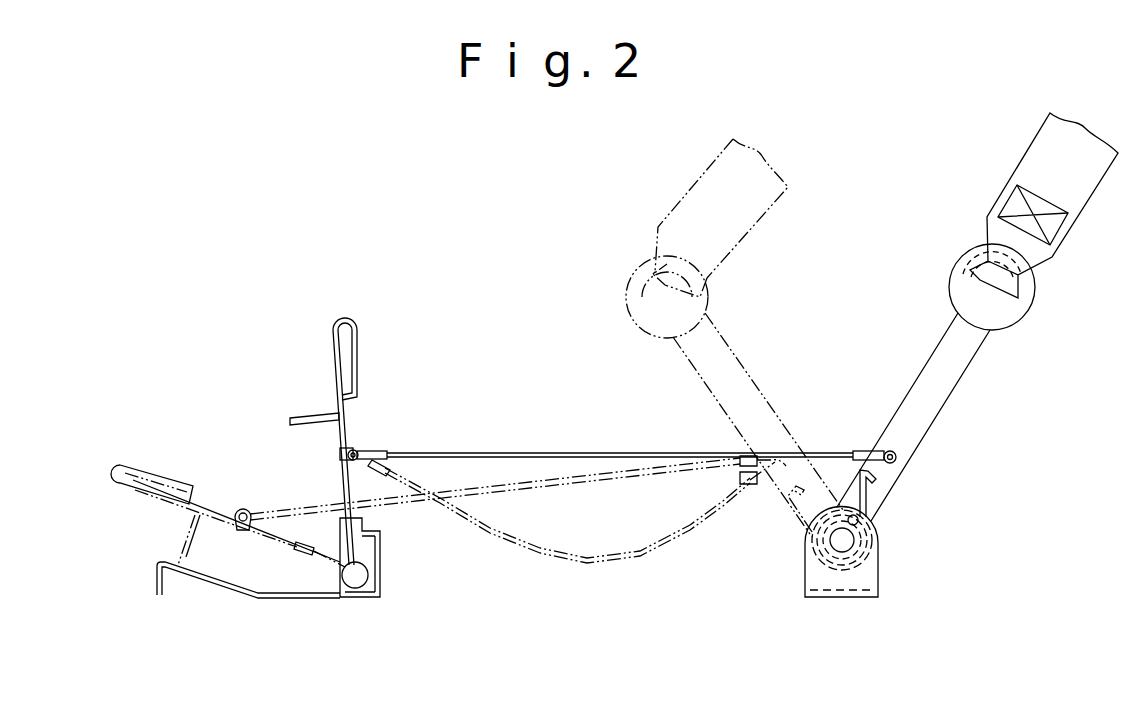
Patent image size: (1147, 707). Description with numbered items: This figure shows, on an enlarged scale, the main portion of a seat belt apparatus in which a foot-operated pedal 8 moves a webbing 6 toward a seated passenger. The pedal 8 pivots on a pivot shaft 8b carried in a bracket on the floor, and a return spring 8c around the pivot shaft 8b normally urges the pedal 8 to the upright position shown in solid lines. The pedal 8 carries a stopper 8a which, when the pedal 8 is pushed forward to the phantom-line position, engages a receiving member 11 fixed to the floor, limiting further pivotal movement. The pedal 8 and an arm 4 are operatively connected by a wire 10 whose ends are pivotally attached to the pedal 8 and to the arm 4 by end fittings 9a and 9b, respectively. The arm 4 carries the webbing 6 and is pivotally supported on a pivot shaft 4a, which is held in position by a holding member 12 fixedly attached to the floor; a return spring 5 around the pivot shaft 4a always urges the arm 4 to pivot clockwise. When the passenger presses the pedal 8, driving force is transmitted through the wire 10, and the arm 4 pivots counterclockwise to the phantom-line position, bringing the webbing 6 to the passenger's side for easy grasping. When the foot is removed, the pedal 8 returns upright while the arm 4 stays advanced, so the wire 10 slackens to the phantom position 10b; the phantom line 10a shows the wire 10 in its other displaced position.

The arm 4 is at (955, 370).
The pivot shaft 4a is at (838, 541).
The return spring 5 is at (875, 500).
The webbing 6 is at (1090, 185).
The pedal 8 is at (358, 346).
The stopper 8a is at (302, 417).
The pivot shaft 8b is at (370, 576).
The return spring 8c is at (300, 580).
The end fitting 9a is at (362, 451).
The end fitting 9b is at (870, 450).
The wire 10 is at (560, 452).
The connecting rod in second position 10a is at (592, 490).
The slackened wire position 10b is at (605, 565).
The receiving member 11 is at (225, 598).
The holding member 12 is at (870, 580).